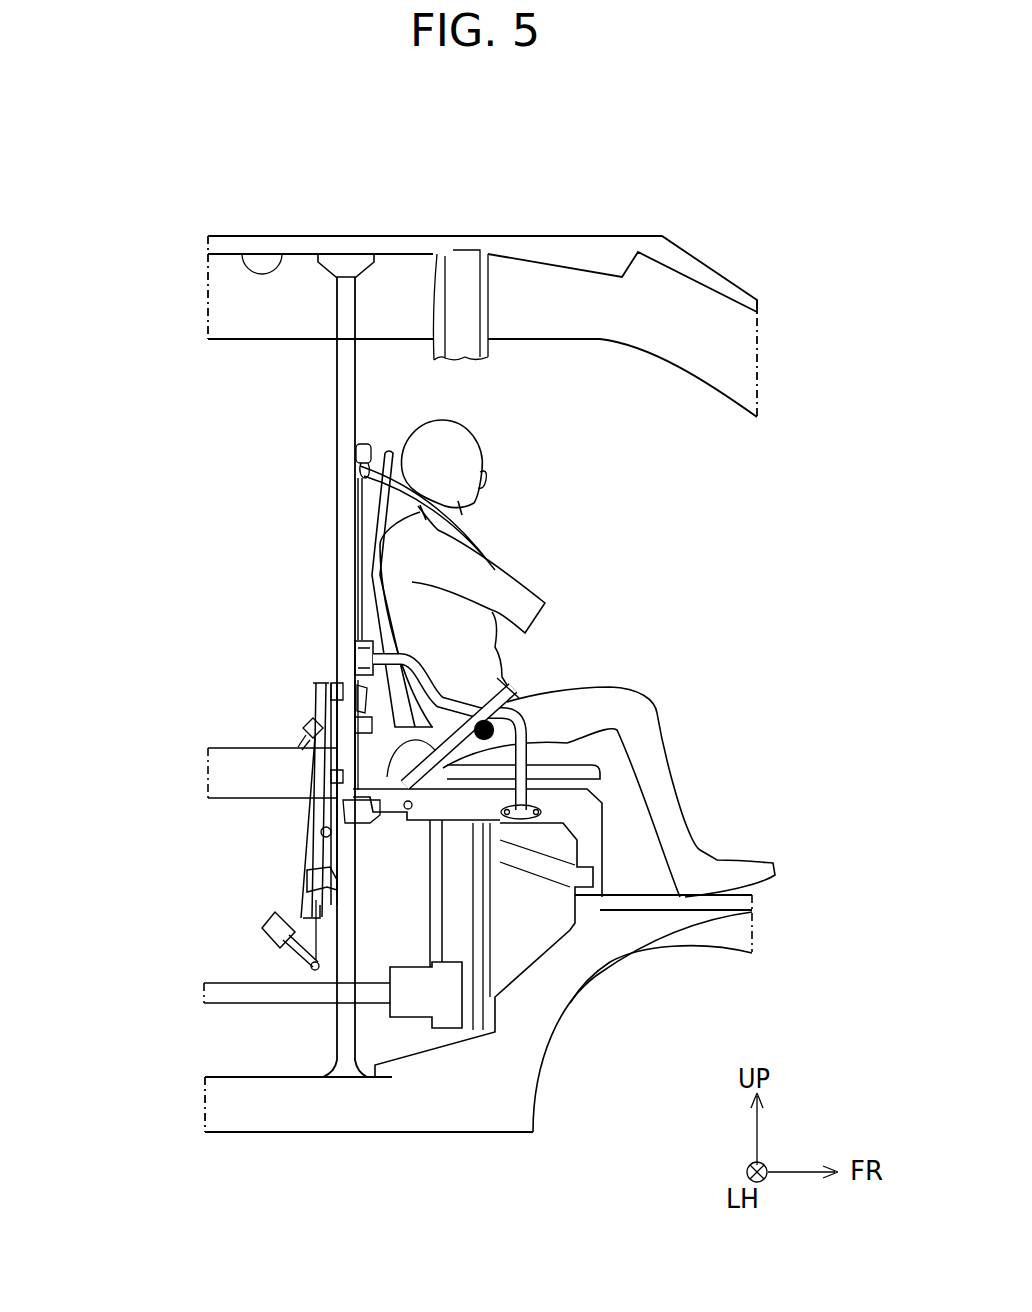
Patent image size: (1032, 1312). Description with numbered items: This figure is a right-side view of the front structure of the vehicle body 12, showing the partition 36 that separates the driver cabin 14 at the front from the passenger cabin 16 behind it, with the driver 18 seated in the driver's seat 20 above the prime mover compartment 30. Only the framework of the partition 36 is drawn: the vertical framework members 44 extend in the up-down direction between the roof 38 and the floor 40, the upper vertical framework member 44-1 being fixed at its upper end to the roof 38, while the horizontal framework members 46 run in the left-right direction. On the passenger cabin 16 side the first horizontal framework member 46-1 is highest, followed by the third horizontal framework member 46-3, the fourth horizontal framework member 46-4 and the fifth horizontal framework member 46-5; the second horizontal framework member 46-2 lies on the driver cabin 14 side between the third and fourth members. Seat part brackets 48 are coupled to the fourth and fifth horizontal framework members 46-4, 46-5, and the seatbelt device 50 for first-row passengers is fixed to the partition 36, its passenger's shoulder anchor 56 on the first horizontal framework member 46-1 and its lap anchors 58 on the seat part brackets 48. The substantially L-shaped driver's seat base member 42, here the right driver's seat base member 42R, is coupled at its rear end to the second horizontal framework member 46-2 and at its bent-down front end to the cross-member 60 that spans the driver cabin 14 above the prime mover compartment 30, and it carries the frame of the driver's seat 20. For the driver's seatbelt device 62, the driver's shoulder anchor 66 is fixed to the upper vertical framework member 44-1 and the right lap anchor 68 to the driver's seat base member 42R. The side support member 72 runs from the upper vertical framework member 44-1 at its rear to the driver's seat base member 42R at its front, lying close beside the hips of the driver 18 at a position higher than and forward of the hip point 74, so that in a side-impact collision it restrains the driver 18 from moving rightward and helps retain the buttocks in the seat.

The vehicle body 12 is at (612, 203).
The driver cabin 14 is at (698, 482).
The passenger cabin 16 is at (140, 504).
The driver 18 is at (457, 436).
The driver's seat 20 is at (400, 638).
The prime mover compartment 30 is at (692, 1017).
The partition 36 is at (305, 582).
The roof 38 is at (247, 272).
The floor 40 is at (240, 1077).
The driver's seat base member 42 is at (593, 811).
The right driver's seat base member 42R is at (593, 825).
The vertical framework members 44 is at (268, 677).
The upper vertical framework member 44-1 is at (344, 384).
The horizontal framework members 46 is at (228, 833).
The first horizontal framework member 46-1 is at (330, 670).
The second horizontal framework member 46-2 is at (323, 848).
The third horizontal framework member 46-3 is at (327, 782).
The fourth horizontal framework member 46-4 is at (322, 898).
The fifth horizontal framework member 46-5 is at (310, 990).
The seat part bracket 48 is at (308, 937).
The seatbelt device 50 is at (287, 790).
The passenger's shoulder anchor 56 is at (330, 690).
The lap anchor 58 is at (300, 970).
The cross-member 60 is at (586, 905).
The driver's seatbelt device 62 is at (488, 523).
The driver's shoulder anchor 66 is at (352, 455).
The right lap anchor 68 is at (408, 812).
The side support member 72 is at (452, 695).
The hip point 74 is at (517, 740).